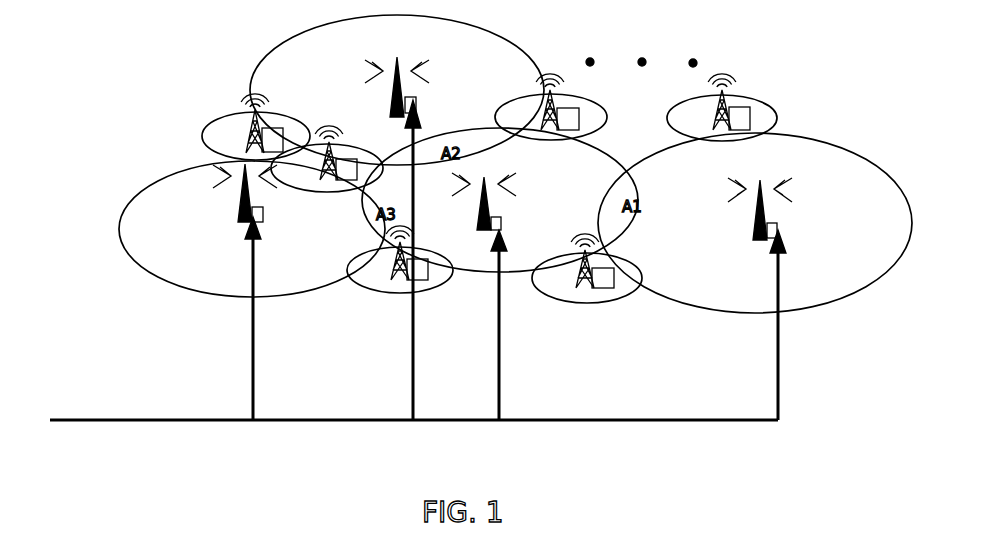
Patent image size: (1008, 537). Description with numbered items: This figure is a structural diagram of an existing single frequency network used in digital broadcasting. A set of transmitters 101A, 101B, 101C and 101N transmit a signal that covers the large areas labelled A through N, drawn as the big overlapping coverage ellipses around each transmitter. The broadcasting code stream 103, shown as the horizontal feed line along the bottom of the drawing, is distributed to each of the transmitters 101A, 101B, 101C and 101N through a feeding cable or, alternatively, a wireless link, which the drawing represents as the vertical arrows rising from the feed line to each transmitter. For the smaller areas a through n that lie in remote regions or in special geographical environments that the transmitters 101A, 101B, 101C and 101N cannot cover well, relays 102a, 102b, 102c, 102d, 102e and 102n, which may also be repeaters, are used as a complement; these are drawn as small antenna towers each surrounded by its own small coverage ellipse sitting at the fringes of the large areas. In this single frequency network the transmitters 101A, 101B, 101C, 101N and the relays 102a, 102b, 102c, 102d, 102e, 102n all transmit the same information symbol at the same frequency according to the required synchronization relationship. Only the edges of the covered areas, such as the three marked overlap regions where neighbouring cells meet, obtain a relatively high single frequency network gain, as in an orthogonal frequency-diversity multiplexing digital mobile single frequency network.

The transmitter 101A is at (263, 216).
The transmitter 101B is at (416, 112).
The transmitter 101C is at (501, 221).
The transmitter 101N is at (778, 235).
The relay 102a is at (372, 133).
The relay 102b is at (298, 100).
The relay 102c is at (446, 233).
The relay 102d is at (594, 80).
The relay 102e is at (631, 243).
The relay 102n is at (764, 81).
The broadcasting code stream 103 is at (143, 419).